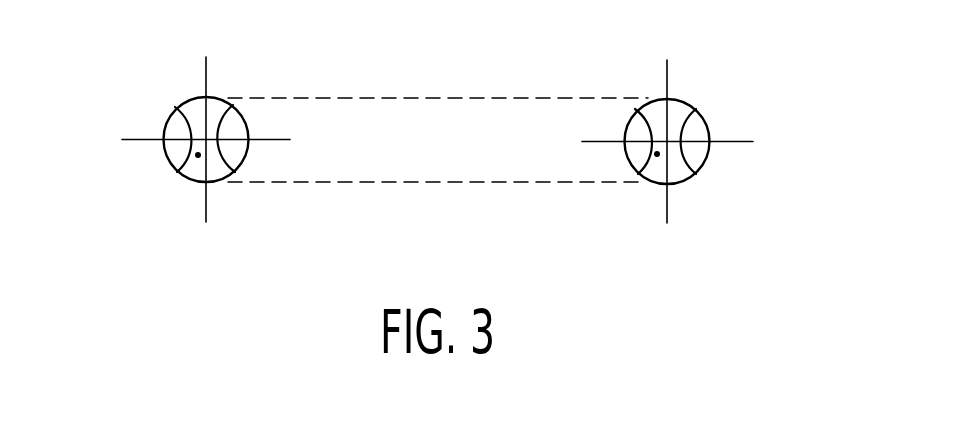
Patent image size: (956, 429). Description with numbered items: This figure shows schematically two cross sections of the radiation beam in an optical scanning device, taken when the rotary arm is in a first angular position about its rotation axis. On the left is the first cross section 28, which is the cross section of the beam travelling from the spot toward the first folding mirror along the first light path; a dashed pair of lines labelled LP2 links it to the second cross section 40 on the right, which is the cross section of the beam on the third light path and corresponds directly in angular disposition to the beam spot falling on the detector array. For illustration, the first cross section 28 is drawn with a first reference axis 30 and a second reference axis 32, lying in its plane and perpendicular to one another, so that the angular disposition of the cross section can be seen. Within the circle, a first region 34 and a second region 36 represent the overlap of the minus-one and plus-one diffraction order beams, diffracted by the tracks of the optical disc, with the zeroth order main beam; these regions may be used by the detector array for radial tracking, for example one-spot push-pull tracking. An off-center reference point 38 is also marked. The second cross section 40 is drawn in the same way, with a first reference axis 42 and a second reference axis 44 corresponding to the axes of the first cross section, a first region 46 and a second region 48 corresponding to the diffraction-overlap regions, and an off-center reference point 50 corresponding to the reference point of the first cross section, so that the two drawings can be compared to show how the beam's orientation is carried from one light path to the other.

The first cross section 28 is at (675, 113).
The first reference axis 30 is at (733, 143).
The second reference axis 32 is at (665, 202).
The first region 34 is at (632, 152).
The second region 36 is at (698, 130).
The off-center reference point 38 is at (663, 157).
The second cross section 40 is at (216, 112).
The first reference axis 42 is at (138, 138).
The second reference axis 44 is at (205, 198).
The first region 46 is at (180, 150).
The second region 48 is at (237, 150).
The off-center reference point 50 is at (197, 158).
The second lens path LP2 is at (500, 98).